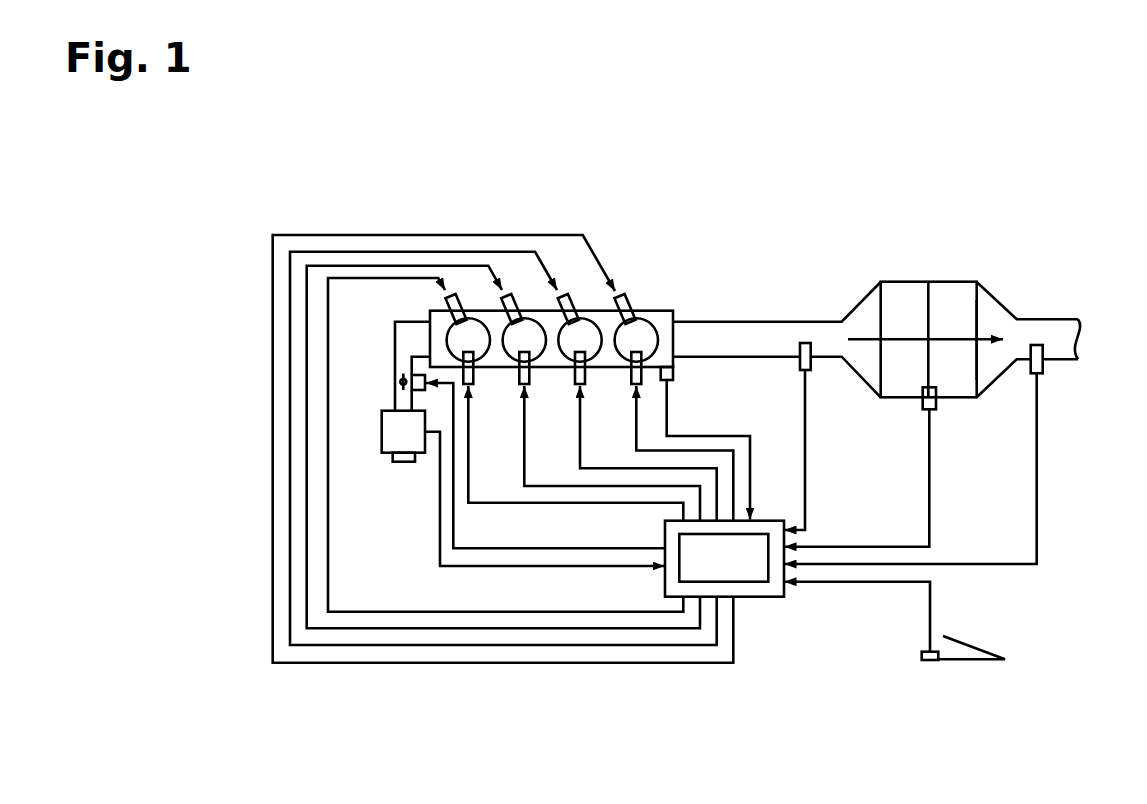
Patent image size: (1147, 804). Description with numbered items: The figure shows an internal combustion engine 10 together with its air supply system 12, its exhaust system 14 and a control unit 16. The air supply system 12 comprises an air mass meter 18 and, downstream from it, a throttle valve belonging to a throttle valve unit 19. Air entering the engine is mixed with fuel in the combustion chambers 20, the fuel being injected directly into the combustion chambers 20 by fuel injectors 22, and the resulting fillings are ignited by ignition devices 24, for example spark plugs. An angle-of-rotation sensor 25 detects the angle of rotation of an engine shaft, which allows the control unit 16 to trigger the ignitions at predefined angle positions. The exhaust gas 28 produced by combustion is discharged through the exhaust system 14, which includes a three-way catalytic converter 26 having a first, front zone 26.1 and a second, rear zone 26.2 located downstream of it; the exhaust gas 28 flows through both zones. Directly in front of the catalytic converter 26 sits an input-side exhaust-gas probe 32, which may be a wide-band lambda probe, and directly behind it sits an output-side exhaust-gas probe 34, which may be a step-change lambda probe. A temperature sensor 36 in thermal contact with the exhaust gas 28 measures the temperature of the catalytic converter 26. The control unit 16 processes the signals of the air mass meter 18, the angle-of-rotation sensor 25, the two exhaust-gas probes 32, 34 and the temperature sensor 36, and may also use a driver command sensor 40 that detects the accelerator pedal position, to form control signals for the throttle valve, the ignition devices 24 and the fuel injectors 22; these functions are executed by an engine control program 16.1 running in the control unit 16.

The internal combustion engine 10 is at (712, 205).
The air supply system 12 is at (401, 474).
The exhaust system 14 is at (1098, 424).
The control unit 16 is at (776, 598).
The engine control program 16.1 is at (748, 583).
The air mass meter 18 is at (382, 432).
The throttle valve unit 19 is at (412, 376).
The combustion chambers 20 is at (660, 310).
The fuel injectors 22 is at (628, 378).
The ignition devices 24 is at (628, 297).
The angle-of-rotation sensor 25 is at (673, 373).
The three-way catalytic converter 26 is at (866, 400).
The first zone 26.1 is at (898, 288).
The second zone 26.2 is at (963, 288).
The exhaust gas 28 is at (950, 337).
The input-side exhaust-gas probe 32 is at (797, 360).
The output-side exhaust-gas probe 34 is at (1043, 357).
The temperature sensor 36 is at (937, 402).
The driver command sensor 40 is at (930, 662).